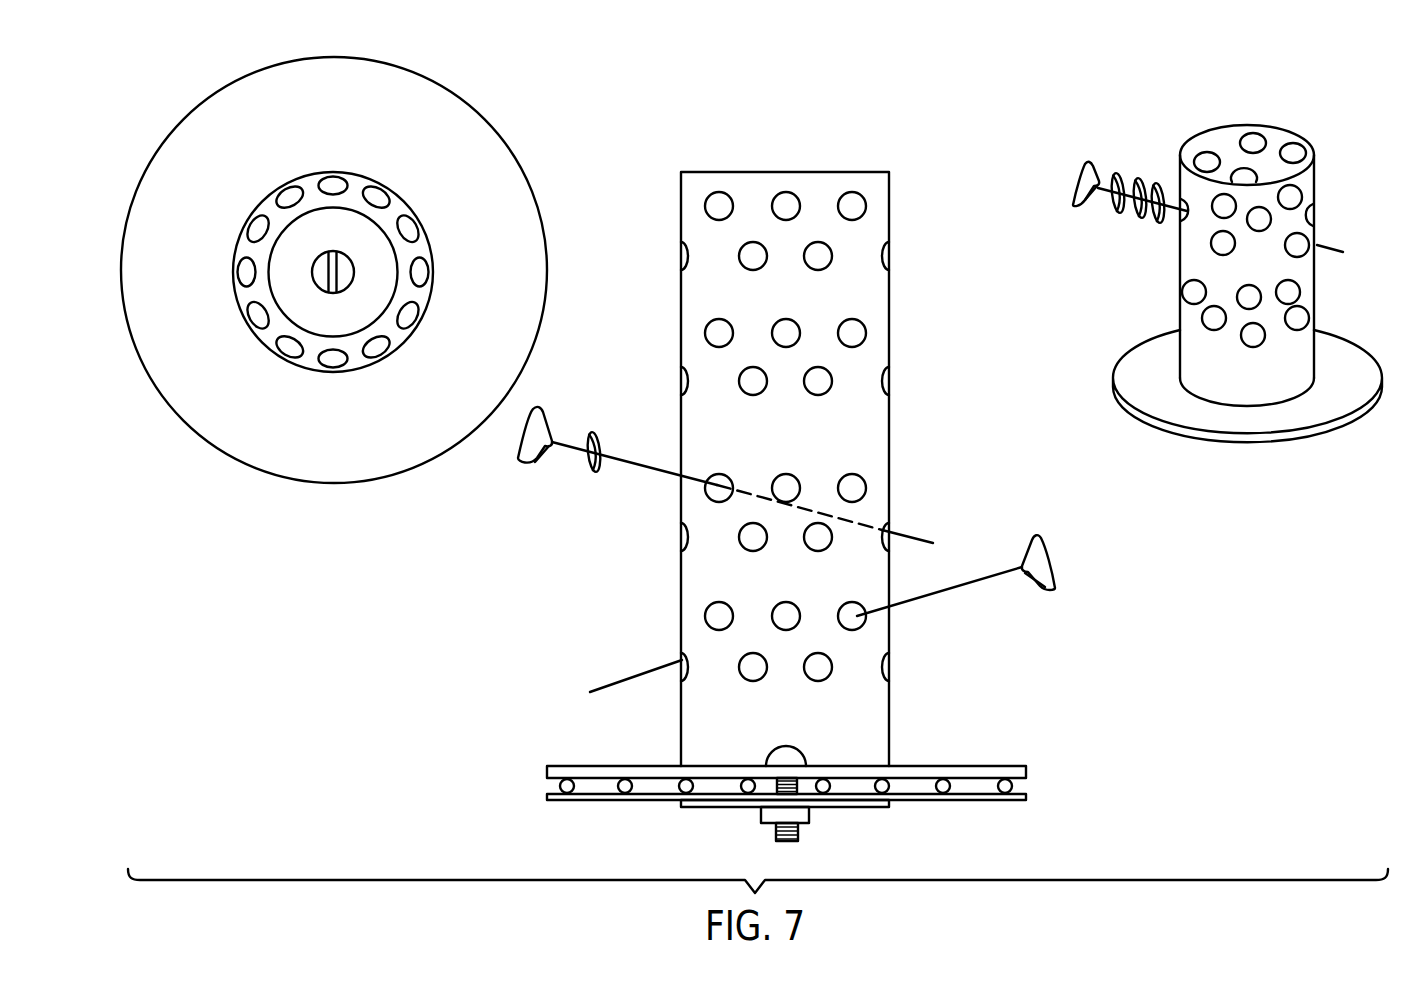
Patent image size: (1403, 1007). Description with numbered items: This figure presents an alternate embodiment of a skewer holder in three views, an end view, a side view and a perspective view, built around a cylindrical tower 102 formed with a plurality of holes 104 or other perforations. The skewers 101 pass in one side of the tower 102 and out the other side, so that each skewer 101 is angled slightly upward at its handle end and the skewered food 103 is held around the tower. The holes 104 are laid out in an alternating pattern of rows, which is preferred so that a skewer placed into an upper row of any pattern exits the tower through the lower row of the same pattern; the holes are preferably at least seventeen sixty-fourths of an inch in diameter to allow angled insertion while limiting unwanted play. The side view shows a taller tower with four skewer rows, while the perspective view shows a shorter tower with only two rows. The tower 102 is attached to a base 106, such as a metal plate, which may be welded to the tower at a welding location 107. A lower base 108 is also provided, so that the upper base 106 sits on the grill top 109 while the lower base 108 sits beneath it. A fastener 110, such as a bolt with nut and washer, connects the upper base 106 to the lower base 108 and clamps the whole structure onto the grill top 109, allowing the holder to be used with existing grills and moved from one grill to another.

The pin 101 is at (525, 463).
The tower 102 is at (335, 170).
The skewered food 103 is at (1157, 188).
The holes 104 is at (850, 200).
The base 106 is at (998, 766).
The welding location 107 is at (892, 765).
The lower base 108 is at (1027, 795).
The grill top 109 is at (1026, 786).
The fastener 110 is at (812, 817).